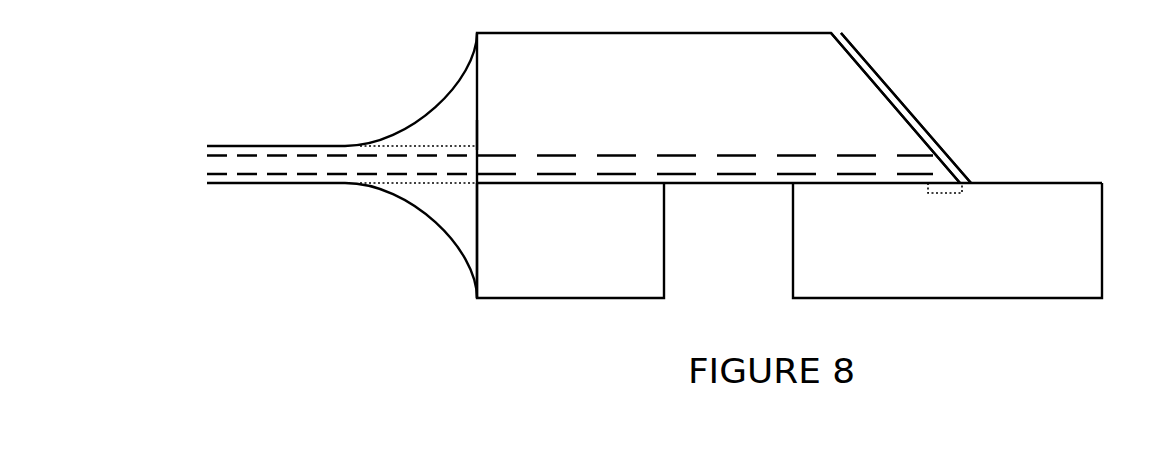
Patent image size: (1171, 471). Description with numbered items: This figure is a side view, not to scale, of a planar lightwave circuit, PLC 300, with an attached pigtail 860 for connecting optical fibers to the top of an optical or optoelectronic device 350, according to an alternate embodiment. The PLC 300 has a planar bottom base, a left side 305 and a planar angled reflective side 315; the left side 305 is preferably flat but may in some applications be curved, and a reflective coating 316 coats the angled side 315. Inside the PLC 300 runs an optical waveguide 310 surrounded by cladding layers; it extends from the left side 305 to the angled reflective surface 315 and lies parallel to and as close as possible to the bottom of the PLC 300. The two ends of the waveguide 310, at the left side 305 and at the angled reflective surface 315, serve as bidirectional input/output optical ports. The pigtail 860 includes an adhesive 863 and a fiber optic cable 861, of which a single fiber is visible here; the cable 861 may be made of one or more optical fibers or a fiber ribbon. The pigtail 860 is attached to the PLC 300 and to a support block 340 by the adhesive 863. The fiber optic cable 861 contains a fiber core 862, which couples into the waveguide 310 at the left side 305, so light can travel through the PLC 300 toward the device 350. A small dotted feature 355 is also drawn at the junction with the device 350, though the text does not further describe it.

The PLC 300 is at (547, 78).
The left side 305 is at (478, 130).
The optical waveguide 310 is at (595, 165).
The planar angled reflective side 315 is at (885, 99).
The reflective coating 316 is at (878, 73).
The support block 340 is at (547, 281).
The optical or optoelectronic device 350 is at (1058, 281).
The alignment feature 355 is at (962, 193).
The pigtail 860 is at (333, 92).
The fiber optic cable 861 is at (292, 146).
The fiber core 862 is at (400, 175).
The adhesive 863 is at (450, 233).